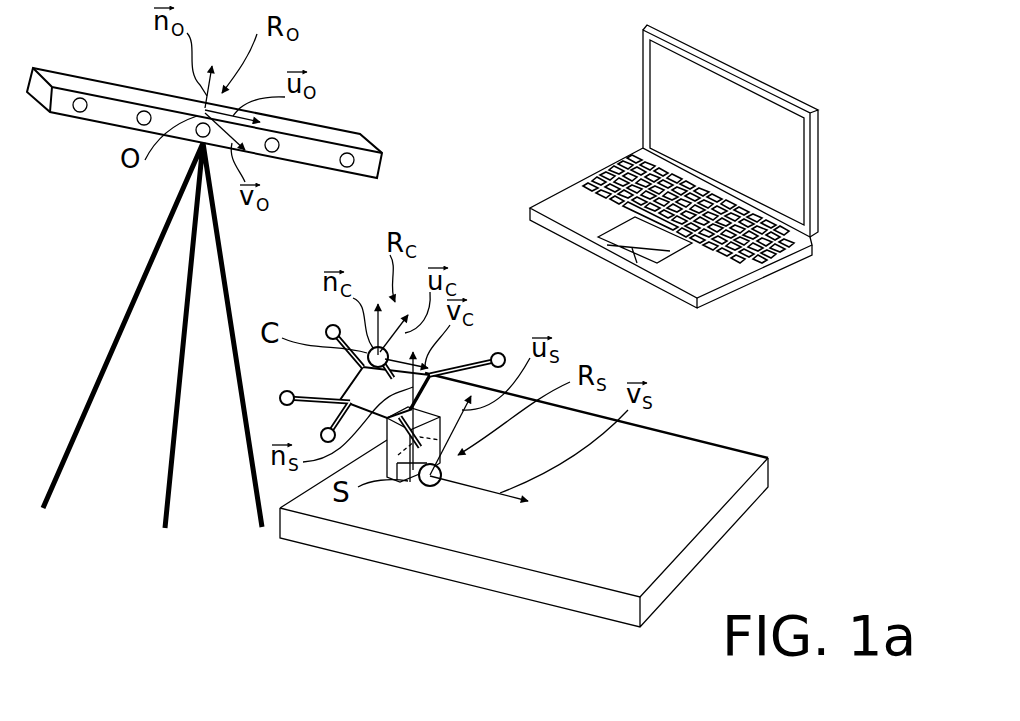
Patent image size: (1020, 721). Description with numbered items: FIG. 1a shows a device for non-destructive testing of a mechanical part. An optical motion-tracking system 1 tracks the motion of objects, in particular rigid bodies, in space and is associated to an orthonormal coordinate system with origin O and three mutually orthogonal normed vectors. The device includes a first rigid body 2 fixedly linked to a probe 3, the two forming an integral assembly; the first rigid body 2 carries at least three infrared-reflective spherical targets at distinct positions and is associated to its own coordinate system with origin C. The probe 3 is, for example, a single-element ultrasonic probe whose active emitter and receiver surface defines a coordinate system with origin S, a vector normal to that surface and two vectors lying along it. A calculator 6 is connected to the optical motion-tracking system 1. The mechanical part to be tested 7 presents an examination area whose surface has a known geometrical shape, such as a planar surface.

The optical motion-tracking system 1 is at (88, 88).
The first rigid body 2 is at (368, 388).
The probe 3 is at (407, 485).
The calculator 6 is at (660, 98).
The mechanical part to be tested 7 is at (697, 473).